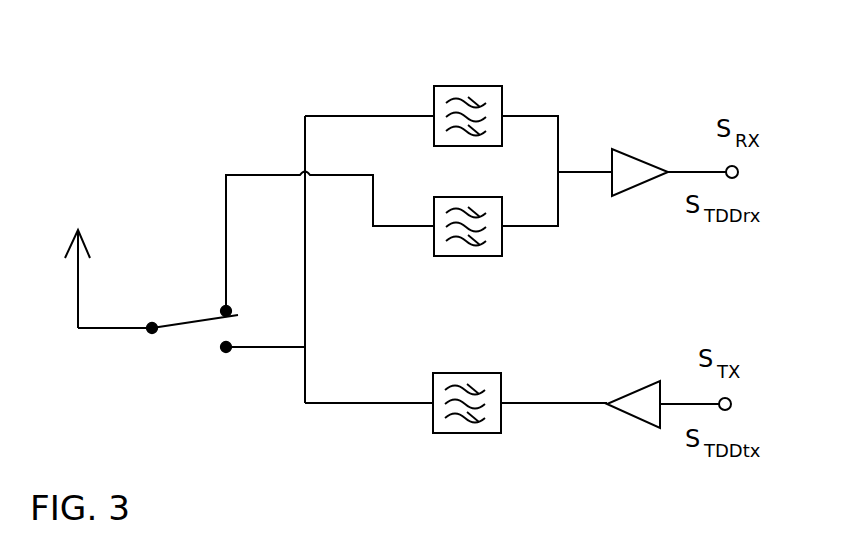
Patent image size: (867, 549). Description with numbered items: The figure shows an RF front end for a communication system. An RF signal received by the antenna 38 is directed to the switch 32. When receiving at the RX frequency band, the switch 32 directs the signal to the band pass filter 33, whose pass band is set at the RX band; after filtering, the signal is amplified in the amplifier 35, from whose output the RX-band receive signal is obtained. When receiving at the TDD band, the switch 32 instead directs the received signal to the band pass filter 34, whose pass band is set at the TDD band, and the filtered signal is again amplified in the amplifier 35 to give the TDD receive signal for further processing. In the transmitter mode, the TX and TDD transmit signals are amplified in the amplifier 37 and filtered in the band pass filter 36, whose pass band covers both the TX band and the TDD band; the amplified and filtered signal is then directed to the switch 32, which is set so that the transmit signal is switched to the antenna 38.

The switch 32 is at (188, 312).
The band pass filter 33 is at (465, 80).
The band pass filter 34 is at (475, 262).
The amplifier 35 is at (630, 153).
The band pass filter 36 is at (457, 440).
The amplifier 37 is at (637, 387).
The antenna 38 is at (102, 257).